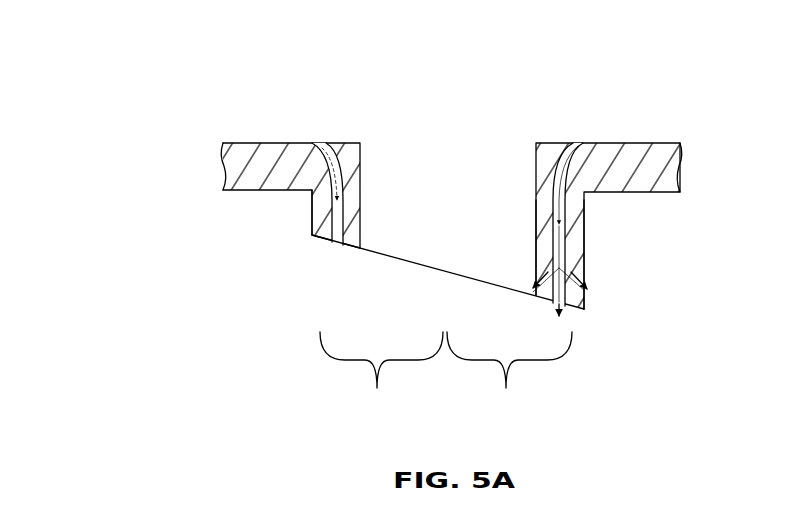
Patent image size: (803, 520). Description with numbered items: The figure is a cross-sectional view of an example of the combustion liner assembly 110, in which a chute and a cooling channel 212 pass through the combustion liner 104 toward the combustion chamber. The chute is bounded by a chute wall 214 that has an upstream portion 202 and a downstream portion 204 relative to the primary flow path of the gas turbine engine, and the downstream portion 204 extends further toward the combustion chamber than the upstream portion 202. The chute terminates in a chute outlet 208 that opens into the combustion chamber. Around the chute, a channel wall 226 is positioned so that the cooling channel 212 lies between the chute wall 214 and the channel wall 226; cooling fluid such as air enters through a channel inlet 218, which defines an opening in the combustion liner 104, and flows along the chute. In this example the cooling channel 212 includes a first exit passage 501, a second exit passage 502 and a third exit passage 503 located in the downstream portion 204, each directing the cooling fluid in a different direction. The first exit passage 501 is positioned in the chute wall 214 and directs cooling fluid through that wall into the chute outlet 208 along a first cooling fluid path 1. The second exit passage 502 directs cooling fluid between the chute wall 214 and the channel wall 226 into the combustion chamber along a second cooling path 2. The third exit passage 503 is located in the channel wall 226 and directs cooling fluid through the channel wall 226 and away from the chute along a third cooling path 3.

The combustion liner assembly 110 is at (182, 72).
The combustion liner 104 is at (232, 157).
The channel inlet 218 is at (314, 134).
The cooling channel 212 is at (336, 220).
The chute outlet 208 is at (371, 252).
The chute wall 214 is at (537, 152).
The channel wall 226 is at (596, 121).
The first exit passage 501 is at (536, 239).
The third exit passage 503 is at (584, 258).
The first cooling fluid path 1 is at (538, 267).
The second cooling path 2 is at (571, 321).
The third cooling path 3 is at (591, 293).
The second exit passage 502 is at (552, 309).
The upstream portion 202 is at (381, 375).
The downstream portion 204 is at (509, 376).